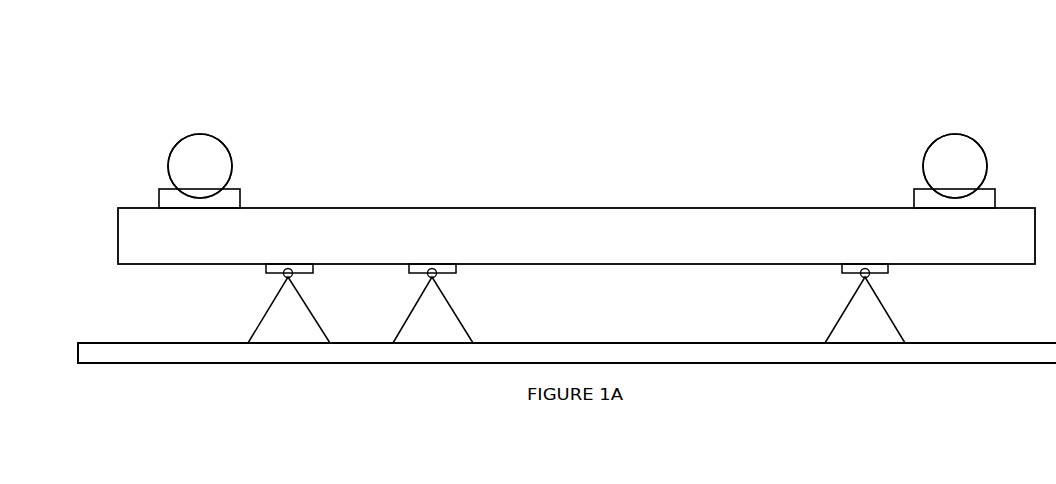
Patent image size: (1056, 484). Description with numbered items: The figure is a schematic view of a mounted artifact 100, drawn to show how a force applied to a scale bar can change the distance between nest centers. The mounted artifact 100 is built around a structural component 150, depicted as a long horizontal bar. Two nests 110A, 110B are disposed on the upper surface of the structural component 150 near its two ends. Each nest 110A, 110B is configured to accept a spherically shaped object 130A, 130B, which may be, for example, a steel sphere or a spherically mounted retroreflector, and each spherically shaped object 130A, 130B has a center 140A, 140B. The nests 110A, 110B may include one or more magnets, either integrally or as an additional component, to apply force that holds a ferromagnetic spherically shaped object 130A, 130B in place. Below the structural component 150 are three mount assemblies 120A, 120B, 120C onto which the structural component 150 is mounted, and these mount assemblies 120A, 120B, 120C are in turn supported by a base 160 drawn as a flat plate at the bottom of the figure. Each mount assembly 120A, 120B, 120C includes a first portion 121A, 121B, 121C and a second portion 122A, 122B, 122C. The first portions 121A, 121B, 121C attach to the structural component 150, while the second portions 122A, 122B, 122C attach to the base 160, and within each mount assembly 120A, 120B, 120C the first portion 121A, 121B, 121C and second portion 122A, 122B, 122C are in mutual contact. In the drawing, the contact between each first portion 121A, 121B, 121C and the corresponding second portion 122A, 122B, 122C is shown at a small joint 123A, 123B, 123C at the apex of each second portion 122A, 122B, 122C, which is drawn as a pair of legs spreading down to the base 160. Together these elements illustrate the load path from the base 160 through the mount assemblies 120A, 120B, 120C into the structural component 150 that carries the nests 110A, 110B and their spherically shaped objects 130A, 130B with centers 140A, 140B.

The mounted artifact 100 is at (582, 80).
The nest 110A is at (162, 188).
The nest 110B is at (918, 188).
The spherically shaped object 130A is at (188, 134).
The spherically shaped object 130B is at (943, 134).
The center 140A is at (198, 167).
The center 140B is at (955, 167).
The structural component 150 is at (598, 207).
The base 160 is at (600, 343).
The mount assembly 120A is at (190, 308).
The mount assembly 120B is at (473, 308).
The mount assembly 120C is at (767, 308).
The first portion 121A is at (266, 267).
The first portion 121B is at (409, 268).
The first portion 121C is at (842, 268).
The second portion 122A is at (264, 317).
The second portion 122B is at (406, 320).
The second portion 122C is at (839, 320).
The pivot joint 123A is at (286, 278).
The pivot joint 123B is at (430, 278).
The pivot joint 123C is at (863, 278).